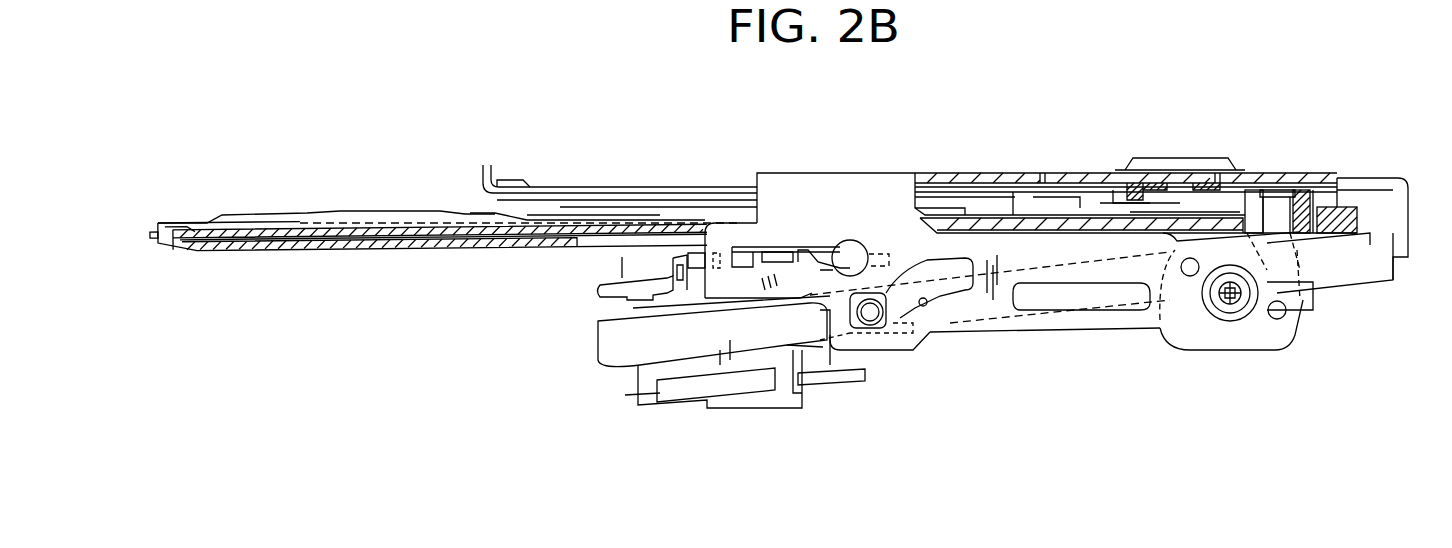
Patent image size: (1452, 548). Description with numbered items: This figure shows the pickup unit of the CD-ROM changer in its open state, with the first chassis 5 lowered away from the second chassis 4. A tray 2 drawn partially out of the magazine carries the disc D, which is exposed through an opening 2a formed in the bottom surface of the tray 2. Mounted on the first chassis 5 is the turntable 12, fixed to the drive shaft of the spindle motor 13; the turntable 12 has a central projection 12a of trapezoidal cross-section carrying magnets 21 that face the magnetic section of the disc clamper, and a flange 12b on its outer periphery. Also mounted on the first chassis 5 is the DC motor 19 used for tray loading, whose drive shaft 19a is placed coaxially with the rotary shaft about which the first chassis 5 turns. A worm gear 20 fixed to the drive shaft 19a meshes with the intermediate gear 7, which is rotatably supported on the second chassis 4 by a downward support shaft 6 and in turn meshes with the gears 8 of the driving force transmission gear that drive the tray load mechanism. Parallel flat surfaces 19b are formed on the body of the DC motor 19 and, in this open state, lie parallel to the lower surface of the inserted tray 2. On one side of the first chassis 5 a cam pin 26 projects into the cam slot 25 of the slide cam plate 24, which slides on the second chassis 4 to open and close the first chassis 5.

The disc D is at (228, 226).
The tray 2 is at (322, 252).
The opening 2a is at (1207, 227).
The second chassis 4 is at (1377, 200).
The first chassis 5 is at (1357, 282).
The support shaft 6 is at (1280, 210).
The intermediate gear 7 is at (1313, 312).
The gears 8 is at (1122, 193).
The turntable 12 is at (746, 240).
The projection 12a is at (770, 250).
The flange 12b is at (600, 290).
The spindle motor 13 is at (598, 341).
The DC motor 19 is at (1190, 338).
The drive shaft 19a is at (1233, 303).
The flat surfaces 19b is at (1233, 225).
The worm gear 20 is at (1230, 297).
The magnets 21 is at (692, 245).
The slide cam plate 24 is at (1137, 340).
The cam slot 25 is at (920, 313).
The cam pin 26 is at (875, 318).